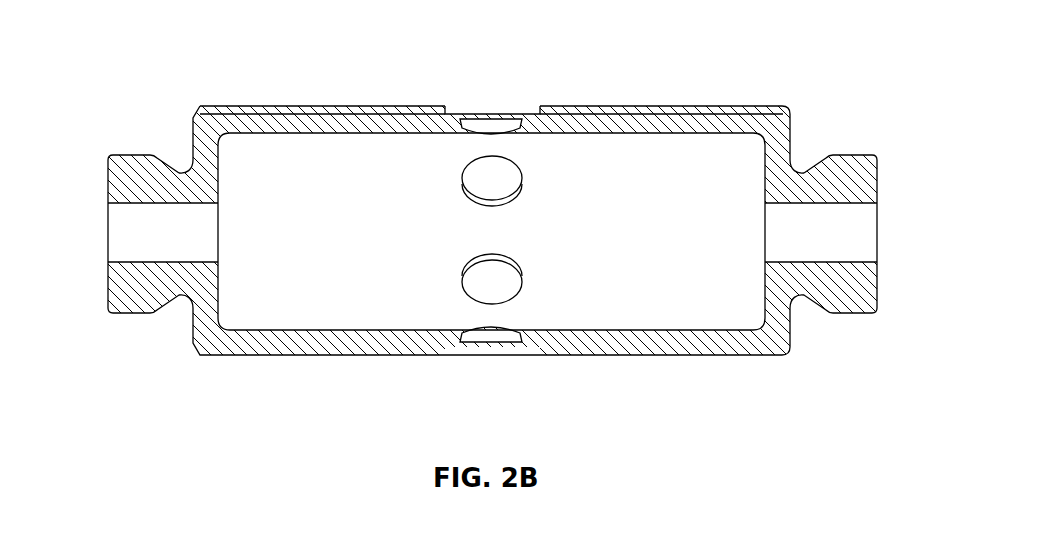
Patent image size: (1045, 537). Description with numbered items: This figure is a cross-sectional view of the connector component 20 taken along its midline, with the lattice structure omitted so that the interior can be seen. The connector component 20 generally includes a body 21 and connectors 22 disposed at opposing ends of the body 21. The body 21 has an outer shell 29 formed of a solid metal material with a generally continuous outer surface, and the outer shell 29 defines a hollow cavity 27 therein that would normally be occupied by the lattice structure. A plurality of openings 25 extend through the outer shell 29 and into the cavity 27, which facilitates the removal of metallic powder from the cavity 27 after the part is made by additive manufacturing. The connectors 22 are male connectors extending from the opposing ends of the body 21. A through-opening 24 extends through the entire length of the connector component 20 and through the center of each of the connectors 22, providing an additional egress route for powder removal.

The connector component 20 is at (202, 53).
The body 21 is at (602, 106).
The connectors 22 is at (856, 155).
The through-opening 24 is at (106, 228).
The openings 25 is at (523, 283).
The hollow cavity 27 is at (718, 130).
The outer shell 29 is at (381, 107).